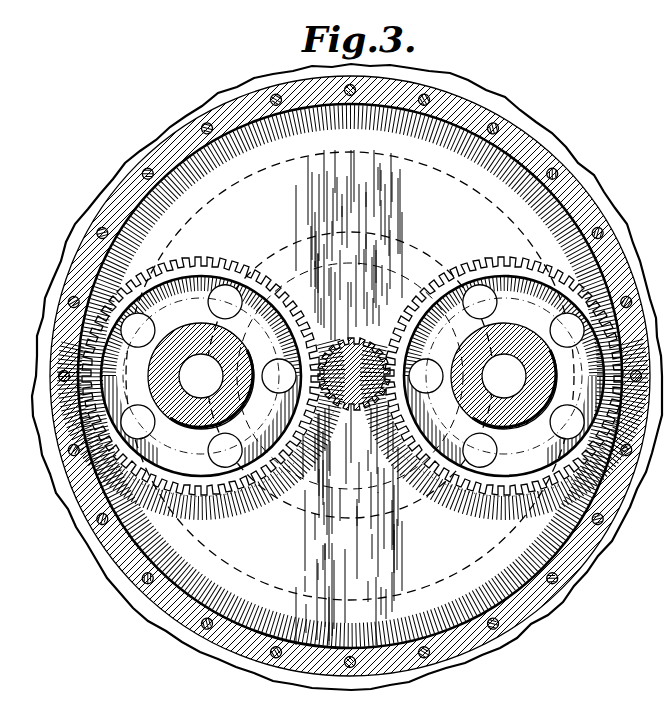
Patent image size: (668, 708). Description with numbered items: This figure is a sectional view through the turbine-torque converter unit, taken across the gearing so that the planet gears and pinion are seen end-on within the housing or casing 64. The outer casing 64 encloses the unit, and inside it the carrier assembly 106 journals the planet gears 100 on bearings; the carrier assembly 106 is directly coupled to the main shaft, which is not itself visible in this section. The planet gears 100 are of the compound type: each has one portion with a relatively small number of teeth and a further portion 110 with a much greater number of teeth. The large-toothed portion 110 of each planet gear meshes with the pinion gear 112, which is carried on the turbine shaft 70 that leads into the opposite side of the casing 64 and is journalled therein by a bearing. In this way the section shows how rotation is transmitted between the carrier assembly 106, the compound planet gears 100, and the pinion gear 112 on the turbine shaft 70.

The housing or casing 64 is at (472, 86).
The carrier assembly 106 is at (540, 142).
The further portion of planet gear 110 is at (201, 366).
The planet gears 100 is at (190, 324).
The pinion gear 112 is at (352, 340).
The turbine shaft 70 is at (357, 404).